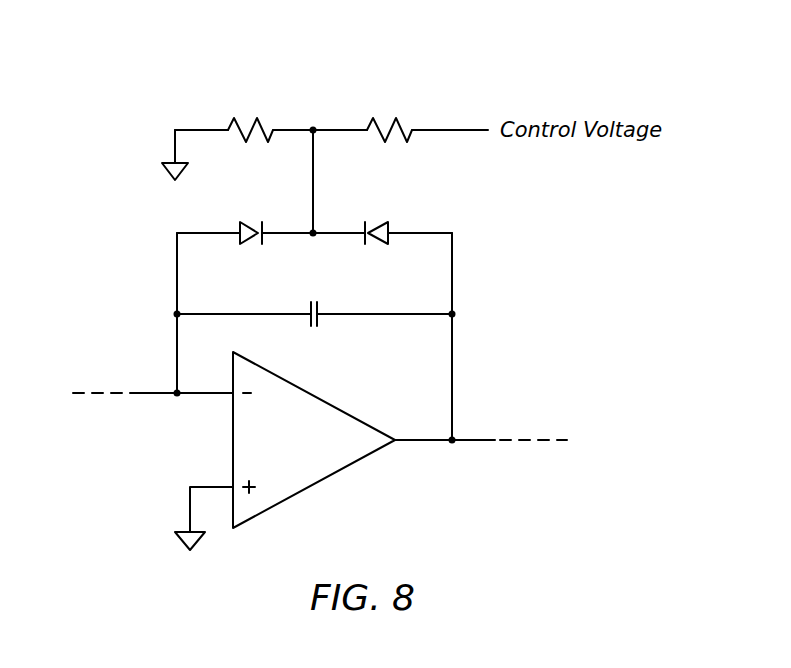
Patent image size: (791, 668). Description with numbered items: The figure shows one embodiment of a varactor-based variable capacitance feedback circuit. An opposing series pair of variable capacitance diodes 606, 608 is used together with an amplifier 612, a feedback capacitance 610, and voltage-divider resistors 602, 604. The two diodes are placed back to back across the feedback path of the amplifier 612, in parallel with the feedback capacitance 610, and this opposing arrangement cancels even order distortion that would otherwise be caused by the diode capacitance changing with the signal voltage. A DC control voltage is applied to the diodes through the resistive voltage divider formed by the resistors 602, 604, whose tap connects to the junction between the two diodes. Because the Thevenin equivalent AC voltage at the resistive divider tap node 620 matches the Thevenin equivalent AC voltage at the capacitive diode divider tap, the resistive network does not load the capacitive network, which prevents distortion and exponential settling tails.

The voltage-divider resistor 602 is at (246, 141).
The voltage-divider resistor 604 is at (385, 141).
The variable capacitance diode 606 is at (244, 242).
The variable capacitance diode 608 is at (382, 242).
The feedback capacitance 610 is at (314, 327).
The amplifier 612 is at (312, 394).
The resistive divider tap node 620 is at (313, 128).